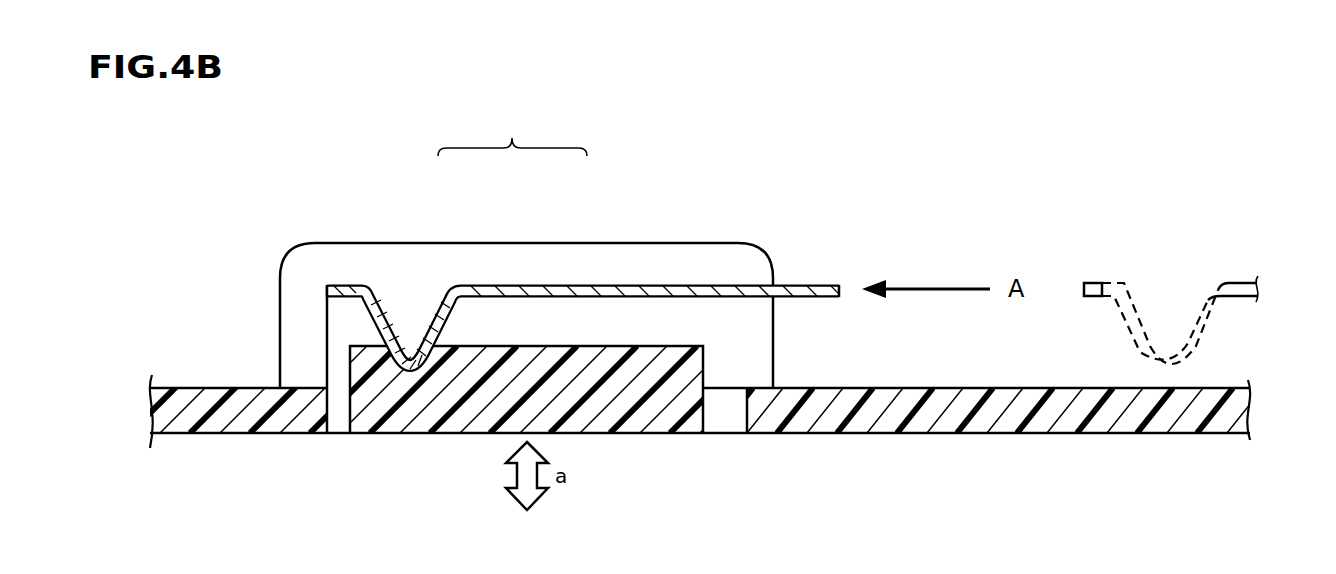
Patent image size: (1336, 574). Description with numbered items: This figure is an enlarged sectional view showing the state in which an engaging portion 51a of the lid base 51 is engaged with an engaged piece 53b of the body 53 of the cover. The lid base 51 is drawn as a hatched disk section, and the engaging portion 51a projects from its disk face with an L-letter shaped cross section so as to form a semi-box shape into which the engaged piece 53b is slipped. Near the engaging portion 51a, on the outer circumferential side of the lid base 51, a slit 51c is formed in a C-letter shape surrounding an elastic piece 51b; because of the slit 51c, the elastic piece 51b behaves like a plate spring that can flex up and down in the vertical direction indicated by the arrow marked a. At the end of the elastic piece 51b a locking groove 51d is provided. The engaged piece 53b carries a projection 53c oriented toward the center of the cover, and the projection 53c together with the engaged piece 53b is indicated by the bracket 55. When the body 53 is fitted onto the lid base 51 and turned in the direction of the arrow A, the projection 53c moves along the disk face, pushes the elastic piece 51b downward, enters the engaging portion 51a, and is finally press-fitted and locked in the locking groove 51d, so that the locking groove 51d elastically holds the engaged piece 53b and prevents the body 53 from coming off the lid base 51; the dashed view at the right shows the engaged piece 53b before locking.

The lid base 51 is at (190, 385).
The engaging portion 51a is at (415, 293).
The elastic piece 51b is at (653, 345).
The slit 51c is at (330, 402).
The locking groove 51d is at (325, 340).
The body 53 is at (793, 282).
The engaged piece 53b is at (615, 283).
The projection 53c is at (410, 362).
The contact section 55 is at (512, 129).